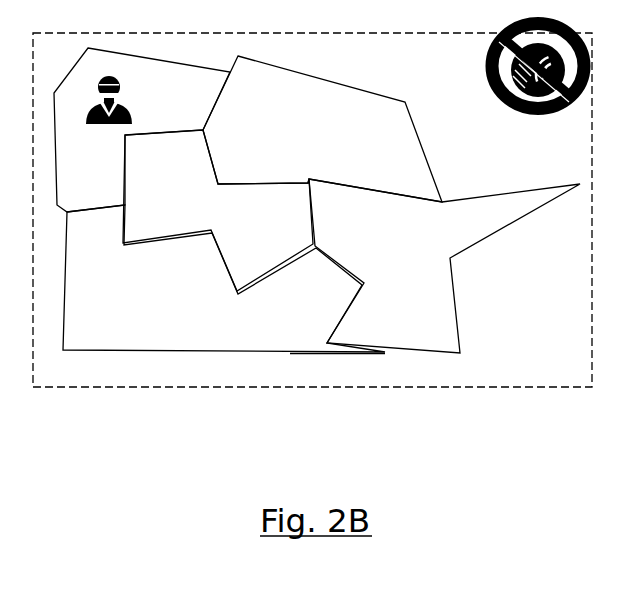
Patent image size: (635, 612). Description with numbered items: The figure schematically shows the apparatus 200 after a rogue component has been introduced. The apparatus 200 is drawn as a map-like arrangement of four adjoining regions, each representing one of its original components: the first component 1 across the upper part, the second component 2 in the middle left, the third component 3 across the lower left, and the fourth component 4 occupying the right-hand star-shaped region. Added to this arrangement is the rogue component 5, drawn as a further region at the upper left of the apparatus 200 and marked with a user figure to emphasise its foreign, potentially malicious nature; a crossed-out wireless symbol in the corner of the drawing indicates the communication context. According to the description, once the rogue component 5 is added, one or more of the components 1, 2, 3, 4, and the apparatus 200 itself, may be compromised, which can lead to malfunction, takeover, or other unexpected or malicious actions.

The apparatus 200 is at (312, 206).
The component 1 is at (322, 129).
The component 2 is at (218, 210).
The component 3 is at (224, 279).
The component 4 is at (444, 266).
The rogue component 5 is at (142, 130).